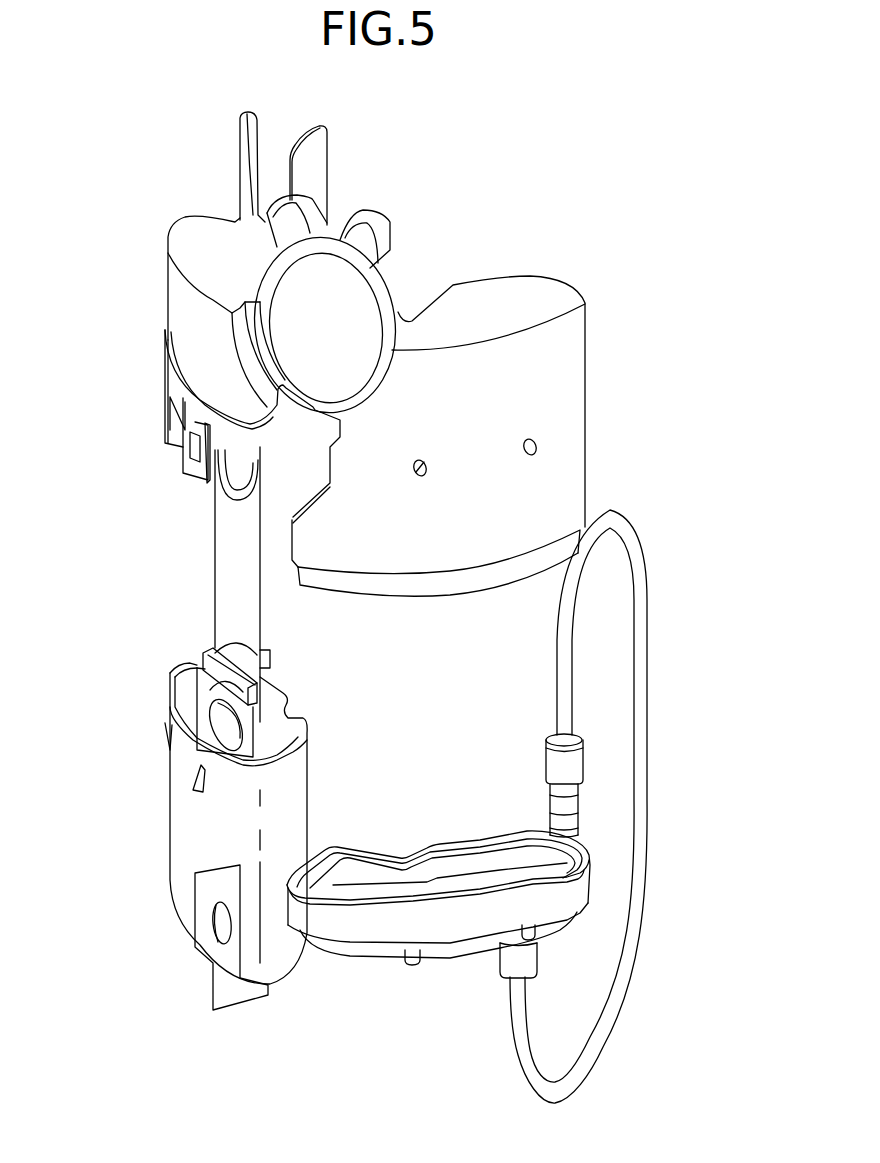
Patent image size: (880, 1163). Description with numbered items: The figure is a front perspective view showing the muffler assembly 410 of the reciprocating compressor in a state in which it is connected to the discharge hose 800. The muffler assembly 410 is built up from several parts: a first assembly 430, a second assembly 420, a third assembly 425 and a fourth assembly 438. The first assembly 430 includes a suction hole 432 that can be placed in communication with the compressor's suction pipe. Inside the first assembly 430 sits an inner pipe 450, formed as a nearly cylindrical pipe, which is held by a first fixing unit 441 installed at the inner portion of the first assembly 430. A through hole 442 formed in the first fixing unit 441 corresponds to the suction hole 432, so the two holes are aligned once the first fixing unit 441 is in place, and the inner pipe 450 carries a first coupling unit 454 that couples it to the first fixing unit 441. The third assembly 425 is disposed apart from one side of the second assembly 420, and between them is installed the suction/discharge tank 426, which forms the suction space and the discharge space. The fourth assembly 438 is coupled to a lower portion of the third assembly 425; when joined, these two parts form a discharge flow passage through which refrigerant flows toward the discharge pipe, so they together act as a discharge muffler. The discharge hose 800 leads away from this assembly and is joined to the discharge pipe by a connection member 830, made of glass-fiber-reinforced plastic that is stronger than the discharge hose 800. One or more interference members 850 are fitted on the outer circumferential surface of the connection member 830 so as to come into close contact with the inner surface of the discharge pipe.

The muffler assembly 410 is at (502, 228).
The second assembly 420 is at (183, 302).
The third assembly 425 is at (580, 408).
The suction/discharge tank 426 is at (330, 278).
The first assembly 430 is at (177, 847).
The suction hole 432 is at (222, 927).
The fourth assembly 438 is at (443, 925).
The first fixing unit 441 is at (207, 690).
The through hole 442 is at (205, 718).
The inner pipe 450 is at (222, 558).
The first coupling unit 454 is at (203, 660).
The discharge hose 800 is at (645, 760).
The connection member 830 is at (598, 753).
The interference member 850 is at (597, 811).